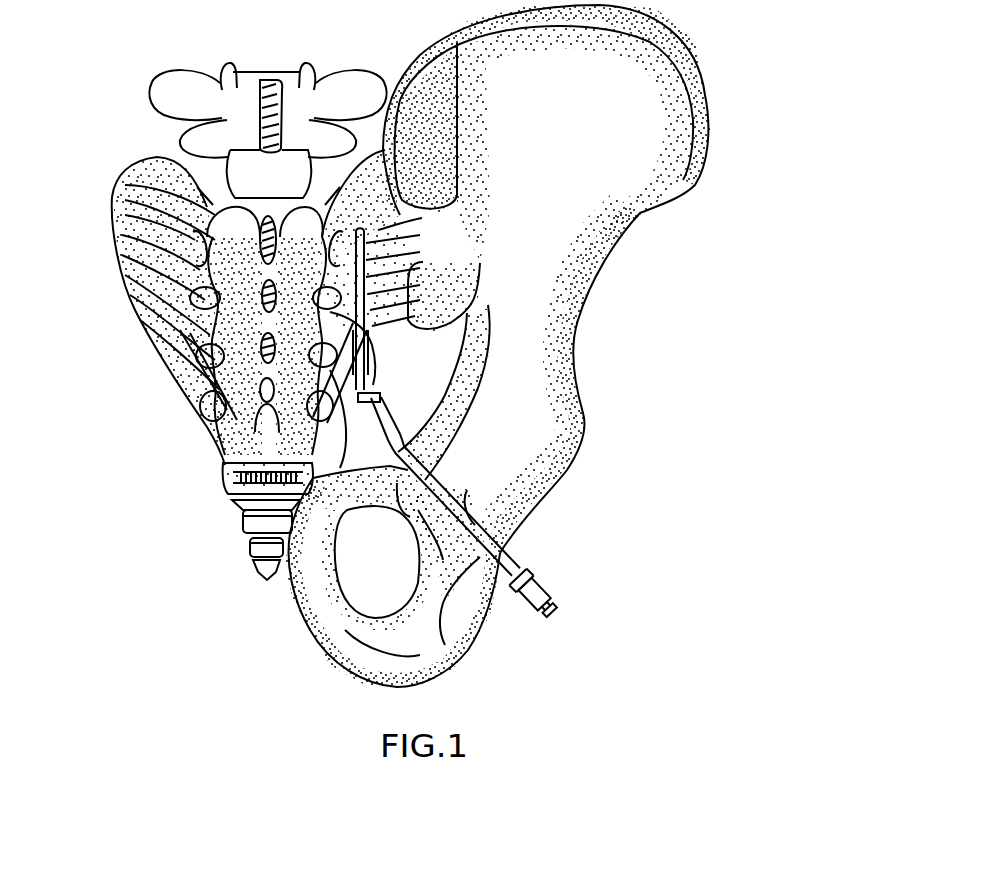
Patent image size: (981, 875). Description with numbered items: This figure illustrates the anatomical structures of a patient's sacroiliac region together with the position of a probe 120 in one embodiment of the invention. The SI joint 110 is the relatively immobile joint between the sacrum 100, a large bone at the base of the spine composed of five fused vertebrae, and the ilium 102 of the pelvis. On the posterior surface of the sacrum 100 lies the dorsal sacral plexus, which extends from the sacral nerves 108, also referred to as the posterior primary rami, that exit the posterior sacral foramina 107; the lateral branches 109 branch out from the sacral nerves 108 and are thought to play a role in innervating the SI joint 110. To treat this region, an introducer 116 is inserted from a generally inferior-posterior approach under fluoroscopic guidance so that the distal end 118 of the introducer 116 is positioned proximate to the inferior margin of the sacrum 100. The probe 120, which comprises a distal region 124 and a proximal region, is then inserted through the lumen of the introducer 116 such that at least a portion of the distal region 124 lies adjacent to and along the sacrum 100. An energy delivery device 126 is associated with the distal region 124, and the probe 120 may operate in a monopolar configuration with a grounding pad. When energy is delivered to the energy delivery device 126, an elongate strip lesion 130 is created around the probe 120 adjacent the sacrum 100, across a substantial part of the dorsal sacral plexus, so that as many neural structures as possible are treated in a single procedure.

The sacrum 100 is at (133, 169).
The ilium 102 is at (667, 128).
The sacral foramina 107 is at (113, 200).
The SI joint 110 is at (118, 265).
The energy delivery device 126 is at (385, 312).
The sacral nerves 108 is at (300, 395).
The strip lesion 130 is at (423, 263).
The distal region 124 is at (377, 363).
The lateral branches 109 is at (362, 378).
The distal end 118 is at (380, 393).
The introducer 116 is at (517, 560).
The probe 120 is at (552, 600).